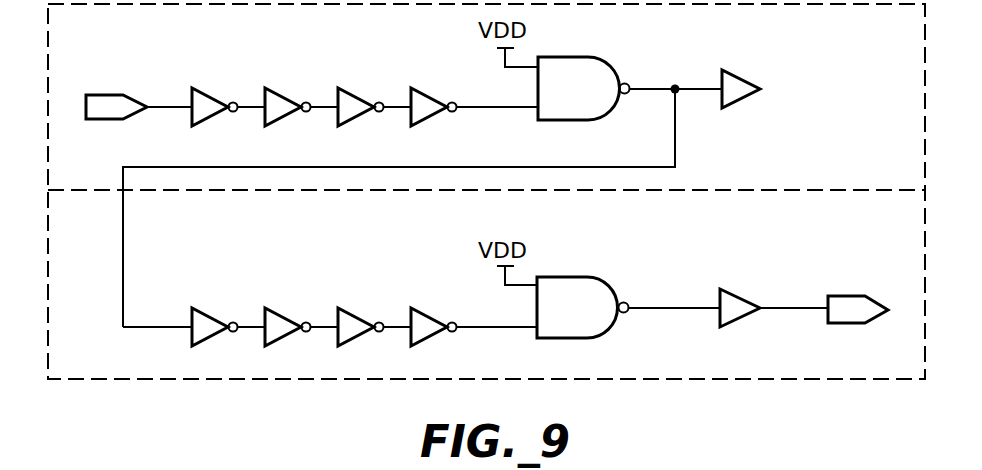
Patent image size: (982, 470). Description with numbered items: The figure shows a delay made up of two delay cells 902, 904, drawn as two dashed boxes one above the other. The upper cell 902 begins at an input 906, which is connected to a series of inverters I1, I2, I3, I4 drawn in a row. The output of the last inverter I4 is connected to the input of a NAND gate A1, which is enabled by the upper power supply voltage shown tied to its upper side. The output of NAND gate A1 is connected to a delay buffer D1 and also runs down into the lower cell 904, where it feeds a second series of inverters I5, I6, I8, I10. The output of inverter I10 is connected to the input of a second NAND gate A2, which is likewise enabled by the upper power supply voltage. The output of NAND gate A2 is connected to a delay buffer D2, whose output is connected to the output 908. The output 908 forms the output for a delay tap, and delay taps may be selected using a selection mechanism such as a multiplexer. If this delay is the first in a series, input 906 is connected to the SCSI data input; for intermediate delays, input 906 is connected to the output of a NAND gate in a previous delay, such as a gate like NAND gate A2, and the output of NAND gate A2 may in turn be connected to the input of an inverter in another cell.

The delay cell 902 is at (762, 159).
The delay cell 904 is at (700, 252).
The input 906 is at (133, 97).
The output 908 is at (872, 297).
The inverter I1 is at (207, 98).
The inverter I2 is at (280, 98).
The inverter I3 is at (353, 98).
The inverter I4 is at (426, 98).
The inverter I5 is at (207, 316).
The inverter I6 is at (280, 316).
The inverter I8 is at (353, 316).
The inverter I10 is at (427, 316).
The NAND gate A1 is at (584, 88).
The NAND gate A2 is at (583, 307).
The delay buffer D1 is at (741, 75).
The delay buffer D2 is at (740, 295).